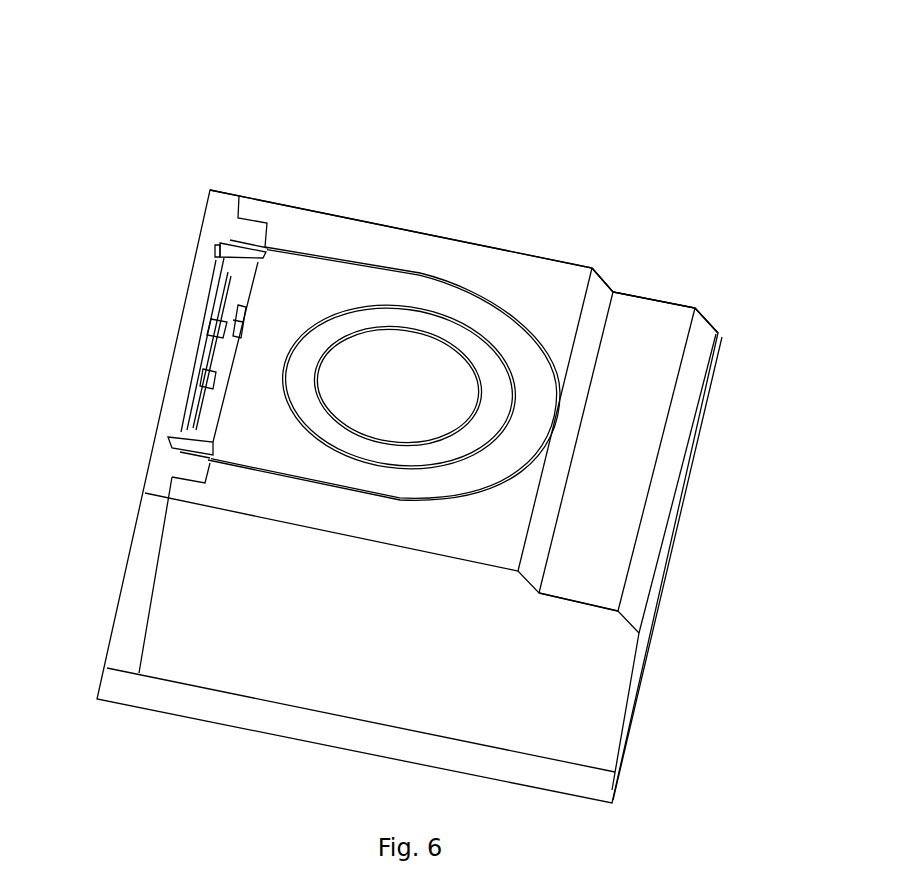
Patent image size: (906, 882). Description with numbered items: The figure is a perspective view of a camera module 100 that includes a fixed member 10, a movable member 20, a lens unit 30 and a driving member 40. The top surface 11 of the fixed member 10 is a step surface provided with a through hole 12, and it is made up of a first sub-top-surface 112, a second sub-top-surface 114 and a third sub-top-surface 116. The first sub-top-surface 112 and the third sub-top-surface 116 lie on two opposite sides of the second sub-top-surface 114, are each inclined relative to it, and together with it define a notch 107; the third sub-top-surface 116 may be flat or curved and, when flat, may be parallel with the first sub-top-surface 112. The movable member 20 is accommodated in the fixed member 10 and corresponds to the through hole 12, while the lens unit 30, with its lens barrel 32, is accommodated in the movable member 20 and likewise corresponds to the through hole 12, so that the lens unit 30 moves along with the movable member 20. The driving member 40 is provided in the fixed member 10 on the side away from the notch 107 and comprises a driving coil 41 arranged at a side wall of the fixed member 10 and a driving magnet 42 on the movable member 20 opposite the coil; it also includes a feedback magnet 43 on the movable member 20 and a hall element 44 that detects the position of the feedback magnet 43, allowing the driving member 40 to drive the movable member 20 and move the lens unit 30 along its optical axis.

The camera module 100 is at (390, 60).
The fixed member 10 is at (328, 238).
The top surface 11 is at (760, 214).
The through hole 12 is at (345, 263).
The movable member 20 is at (382, 293).
The lens unit 30 is at (433, 330).
The lens barrel 32 is at (488, 347).
The driving member 40 is at (121, 242).
The driving coil 41 is at (197, 423).
The driving magnet 42 is at (223, 373).
The feedback magnet 43 is at (240, 312).
The hall element 44 is at (215, 332).
The notch 107 is at (635, 463).
The first sub-top-surface 112 is at (596, 304).
The second sub-top-surface 114 is at (663, 340).
The third sub-top-surface 116 is at (703, 338).